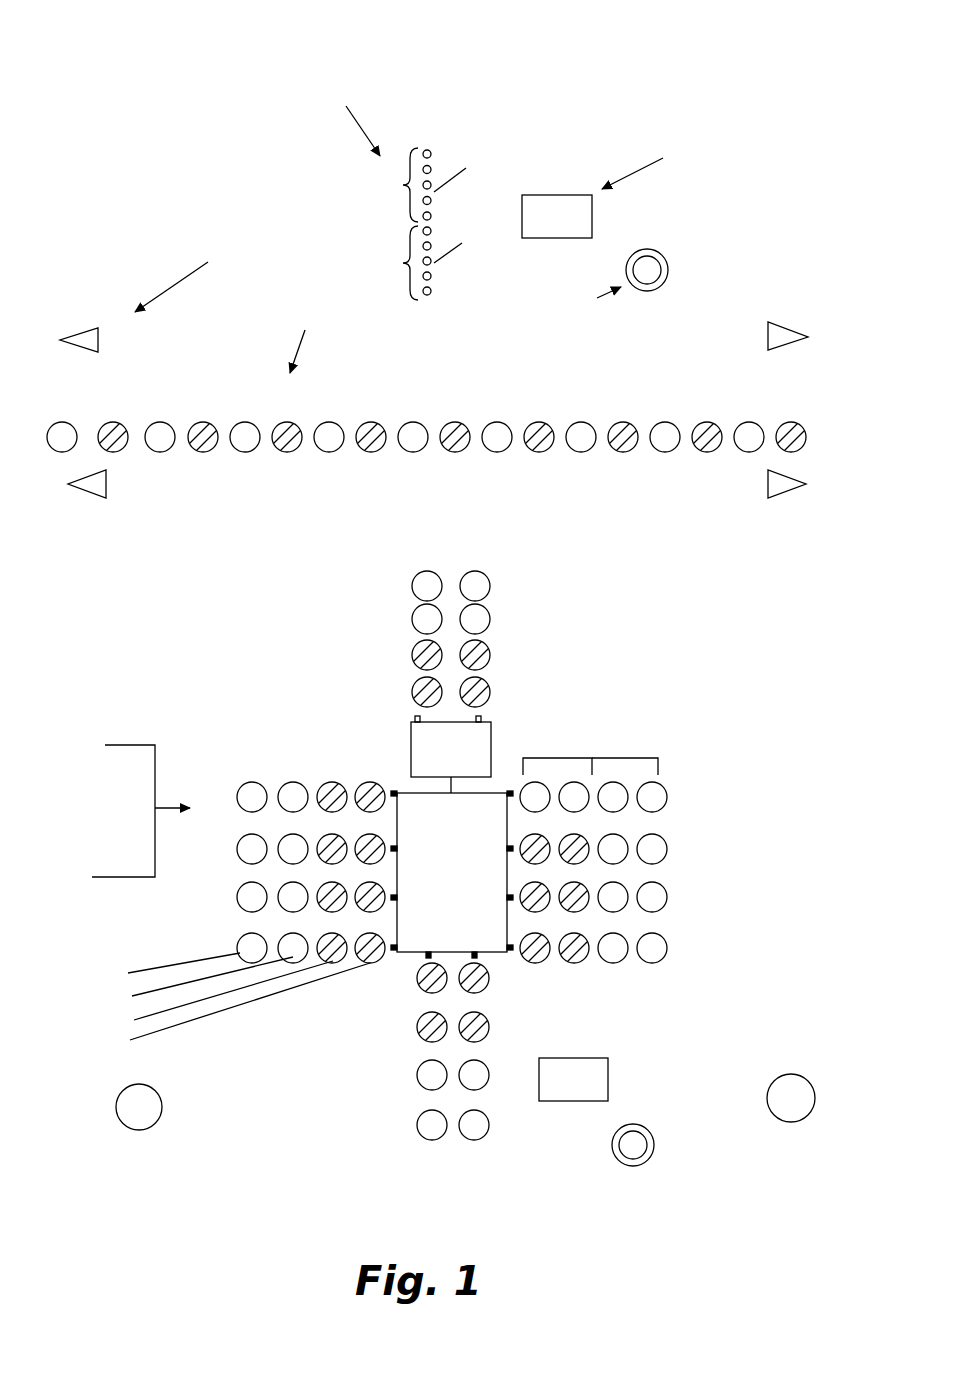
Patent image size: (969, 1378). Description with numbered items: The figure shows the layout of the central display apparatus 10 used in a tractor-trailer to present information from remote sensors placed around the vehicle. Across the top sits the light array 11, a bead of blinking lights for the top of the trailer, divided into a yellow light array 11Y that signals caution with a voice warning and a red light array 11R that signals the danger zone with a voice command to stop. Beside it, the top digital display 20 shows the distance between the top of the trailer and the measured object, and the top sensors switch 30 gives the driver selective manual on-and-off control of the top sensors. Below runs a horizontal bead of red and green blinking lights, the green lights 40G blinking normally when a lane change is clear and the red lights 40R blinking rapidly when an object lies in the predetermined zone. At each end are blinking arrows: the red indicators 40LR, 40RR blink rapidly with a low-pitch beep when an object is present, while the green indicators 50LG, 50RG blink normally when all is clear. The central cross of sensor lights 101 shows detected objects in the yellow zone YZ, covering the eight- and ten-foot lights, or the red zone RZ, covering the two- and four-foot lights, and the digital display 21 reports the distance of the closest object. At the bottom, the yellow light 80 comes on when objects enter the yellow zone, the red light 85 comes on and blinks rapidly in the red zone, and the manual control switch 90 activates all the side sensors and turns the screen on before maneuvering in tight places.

The central display apparatus 10 is at (235, 151).
The light array 11 is at (435, 143).
The yellow light array 11Y is at (393, 185).
The red light array 11R is at (393, 263).
The top digital display 20 is at (568, 194).
The top sensors switch 30 is at (665, 258).
The left red indicator 40LR is at (85, 320).
The right red indicator 40RR is at (775, 322).
The red lights of horizontal array 40R is at (249, 450).
The green lights of horizontal array 40G is at (295, 451).
The left green indicator 50LG is at (108, 498).
The right green indicator 50RG is at (765, 496).
The sensor lights 101 is at (490, 682).
The red zone RZ is at (565, 758).
The yellow zone YZ is at (650, 758).
The yellow light 80 is at (163, 1115).
The red light 85 is at (782, 1073).
The manual control switch 90 is at (652, 1158).
The digital display 21 is at (560, 1101).